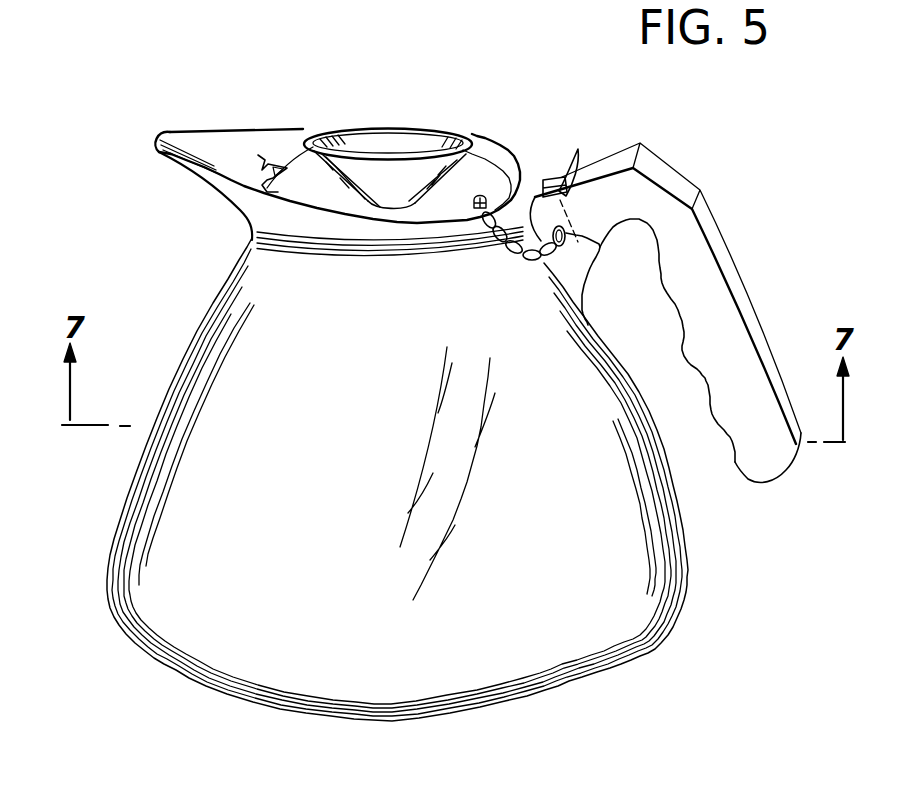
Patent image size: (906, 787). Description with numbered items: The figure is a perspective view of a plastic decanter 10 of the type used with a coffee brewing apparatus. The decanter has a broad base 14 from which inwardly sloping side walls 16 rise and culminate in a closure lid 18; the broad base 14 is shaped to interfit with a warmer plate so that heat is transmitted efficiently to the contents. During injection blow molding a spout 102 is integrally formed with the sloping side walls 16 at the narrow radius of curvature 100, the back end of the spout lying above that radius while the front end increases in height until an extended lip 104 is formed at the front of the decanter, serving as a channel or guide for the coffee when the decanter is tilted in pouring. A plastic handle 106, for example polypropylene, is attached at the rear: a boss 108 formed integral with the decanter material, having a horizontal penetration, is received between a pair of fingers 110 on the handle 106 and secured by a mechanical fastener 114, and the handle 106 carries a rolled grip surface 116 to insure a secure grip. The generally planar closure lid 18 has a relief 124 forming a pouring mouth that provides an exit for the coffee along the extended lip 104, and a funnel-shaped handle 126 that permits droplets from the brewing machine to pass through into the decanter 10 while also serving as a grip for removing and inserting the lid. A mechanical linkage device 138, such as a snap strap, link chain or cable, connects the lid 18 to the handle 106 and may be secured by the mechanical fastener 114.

The plastic decanter 10 is at (176, 323).
The broad base 14 is at (185, 675).
The inwardly sloping side walls 16 is at (134, 490).
The closure lid 18 is at (477, 164).
The narrow radius of curvature 100 is at (258, 243).
The spout 102 is at (283, 133).
The extended lip 104 is at (169, 134).
The handle 106 is at (707, 238).
The boss 108 is at (549, 177).
The pair of fingers 110 is at (590, 147).
The mechanical fastener 114 is at (590, 240).
The rolled grip surface 116 is at (700, 374).
The relief 124 is at (258, 156).
The funnel-shaped handle 126 is at (393, 140).
The mechanical linkage device 138 is at (514, 252).